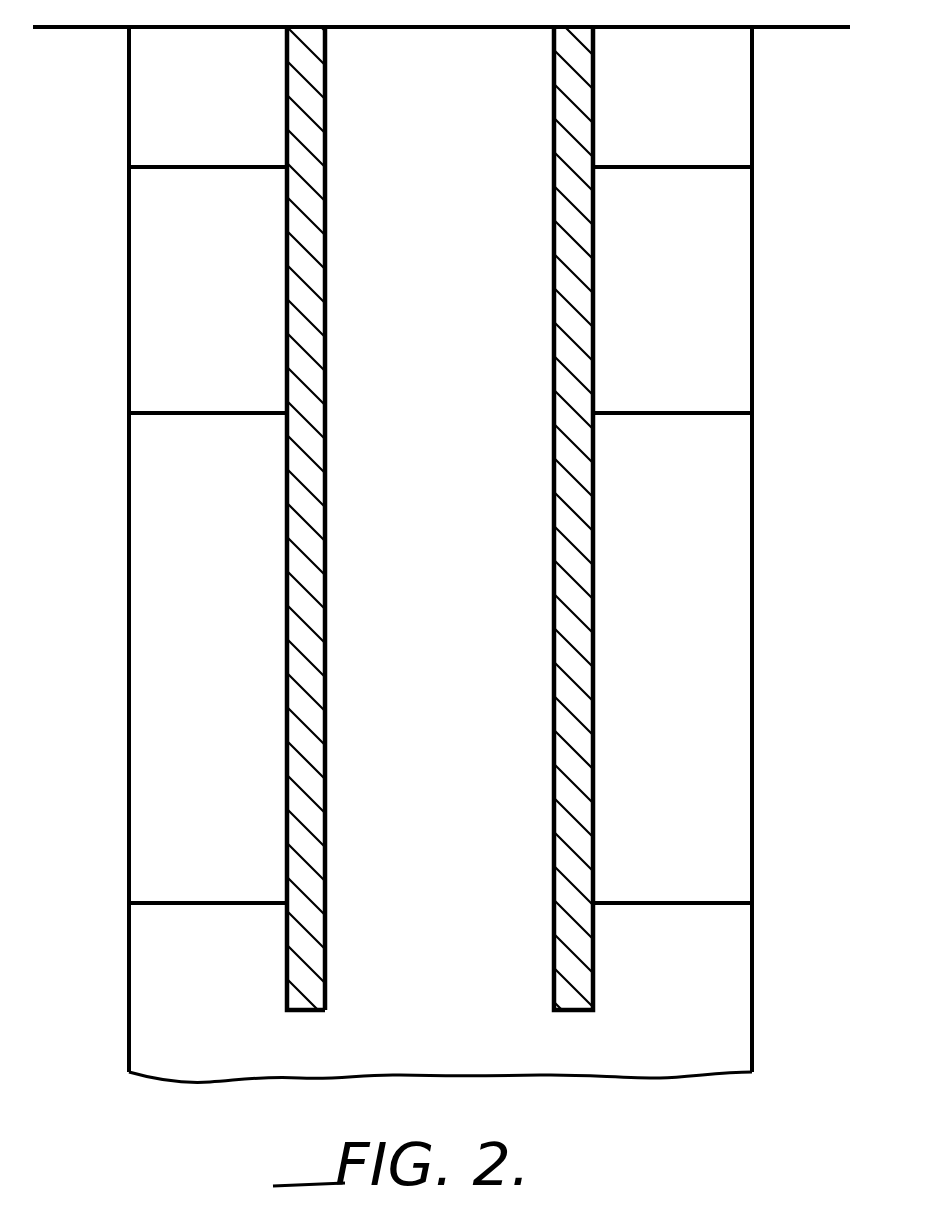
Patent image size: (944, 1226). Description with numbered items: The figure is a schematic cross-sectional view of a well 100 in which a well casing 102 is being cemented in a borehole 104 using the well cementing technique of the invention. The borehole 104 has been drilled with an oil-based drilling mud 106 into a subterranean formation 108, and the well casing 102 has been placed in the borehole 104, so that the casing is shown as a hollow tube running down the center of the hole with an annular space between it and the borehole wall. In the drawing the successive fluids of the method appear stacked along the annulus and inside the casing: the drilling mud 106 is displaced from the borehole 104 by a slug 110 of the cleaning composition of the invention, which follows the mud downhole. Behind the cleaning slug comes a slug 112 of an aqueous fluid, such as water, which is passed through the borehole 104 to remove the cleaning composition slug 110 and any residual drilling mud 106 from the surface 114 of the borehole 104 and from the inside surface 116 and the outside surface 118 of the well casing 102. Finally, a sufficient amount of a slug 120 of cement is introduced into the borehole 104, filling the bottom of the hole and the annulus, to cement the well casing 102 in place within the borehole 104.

The well 100 is at (795, 268).
The well casing 102 is at (593, 532).
The borehole 104 is at (752, 636).
The oil-based drilling mud 106 is at (228, 113).
The subterranean formation 108 is at (68, 295).
The slug of cleaning composition 110 is at (226, 318).
The slug of aqueous fluid 112 is at (220, 765).
The surface of the borehole 114 is at (748, 822).
The inside surface of the well casing 116 is at (330, 449).
The outside surface of the well casing 118 is at (287, 527).
The slug of cement 120 is at (448, 600).